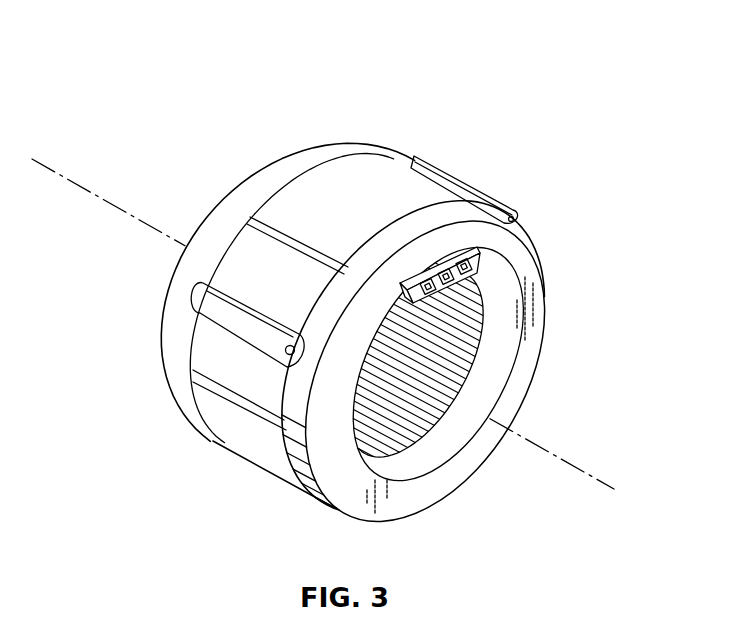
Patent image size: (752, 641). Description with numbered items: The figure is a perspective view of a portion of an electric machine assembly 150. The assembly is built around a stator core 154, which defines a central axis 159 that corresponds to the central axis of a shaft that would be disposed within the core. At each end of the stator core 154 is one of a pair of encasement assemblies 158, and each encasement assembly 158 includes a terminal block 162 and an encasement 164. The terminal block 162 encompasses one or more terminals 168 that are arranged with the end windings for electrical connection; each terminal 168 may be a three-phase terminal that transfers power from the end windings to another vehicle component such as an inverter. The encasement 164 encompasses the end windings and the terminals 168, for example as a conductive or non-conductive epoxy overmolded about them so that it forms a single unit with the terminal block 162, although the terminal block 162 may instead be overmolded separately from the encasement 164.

The electric machine assembly 150 is at (416, 67).
The stator core 154 is at (397, 160).
The encasement assembly 158 is at (319, 128).
The central axis 159 is at (73, 180).
The terminal block 162 is at (462, 230).
The encasement 164 is at (270, 152).
The terminals 168 is at (432, 293).